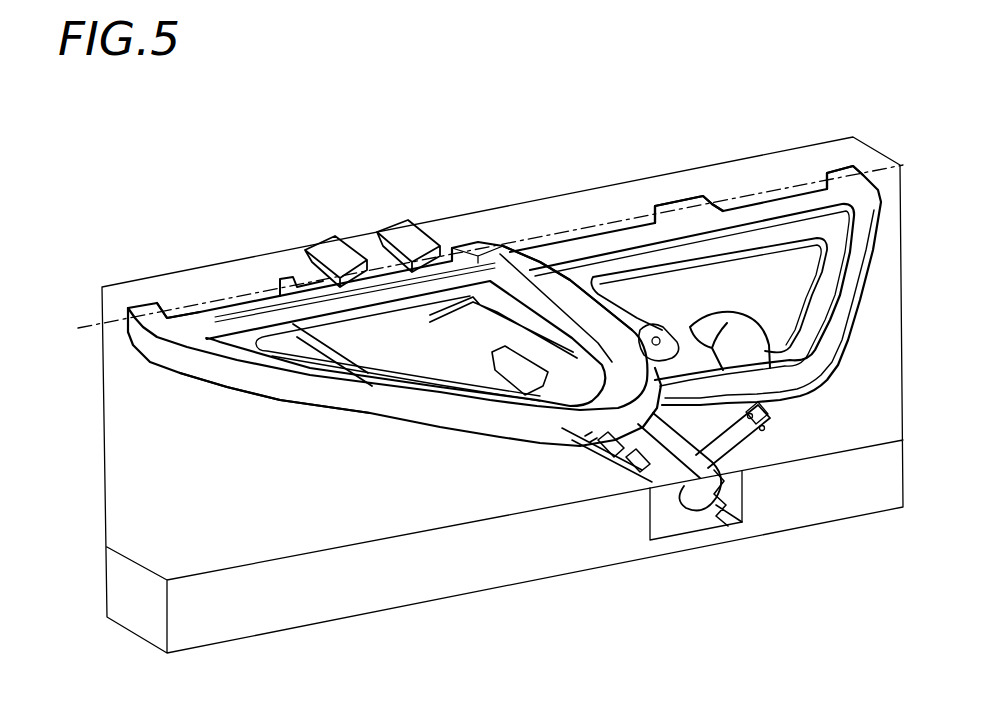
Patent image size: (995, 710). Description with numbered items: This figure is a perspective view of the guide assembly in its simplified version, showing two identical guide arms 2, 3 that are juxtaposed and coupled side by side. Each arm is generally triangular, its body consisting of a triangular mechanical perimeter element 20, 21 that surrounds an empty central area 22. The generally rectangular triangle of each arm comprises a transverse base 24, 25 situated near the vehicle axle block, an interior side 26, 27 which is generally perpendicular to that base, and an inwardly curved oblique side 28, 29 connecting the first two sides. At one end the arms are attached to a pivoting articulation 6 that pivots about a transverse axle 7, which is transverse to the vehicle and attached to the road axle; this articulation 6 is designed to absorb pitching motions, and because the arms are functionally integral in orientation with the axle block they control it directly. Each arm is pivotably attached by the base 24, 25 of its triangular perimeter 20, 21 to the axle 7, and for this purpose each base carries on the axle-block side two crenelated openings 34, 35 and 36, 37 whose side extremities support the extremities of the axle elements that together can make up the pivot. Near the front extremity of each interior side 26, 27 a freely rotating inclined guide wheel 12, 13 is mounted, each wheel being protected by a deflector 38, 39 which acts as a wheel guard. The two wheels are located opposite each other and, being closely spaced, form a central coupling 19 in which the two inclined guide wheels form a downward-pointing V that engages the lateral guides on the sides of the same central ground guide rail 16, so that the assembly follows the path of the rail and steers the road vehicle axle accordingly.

The guide arm 2 is at (403, 297).
The guide arm 3 is at (702, 239).
The articulation 6 is at (213, 290).
The transverse axle 7 is at (94, 332).
The inclined guide wheel 12 is at (607, 530).
The inclined guide wheel 13 is at (770, 413).
The central ground guide rail 16 is at (713, 556).
The central coupling 19 is at (619, 476).
The triangular mechanical perimeter element 20 is at (403, 297).
The triangular mechanical perimeter element 21 is at (702, 239).
The empty central area 22 is at (407, 345).
The transverse base 24 is at (256, 303).
The transverse base 25 is at (637, 240).
The interior side 26 is at (503, 297).
The interior side 27 is at (535, 276).
The inwardly curved oblique side 28 is at (293, 383).
The inwardly curved oblique side 29 is at (832, 329).
The crenelated opening 34 is at (262, 283).
The crenelated opening 35 is at (353, 248).
The crenelated opening 36 is at (590, 213).
The crenelated opening 37 is at (752, 184).
The deflector 38 is at (640, 483).
The deflector 39 is at (743, 490).